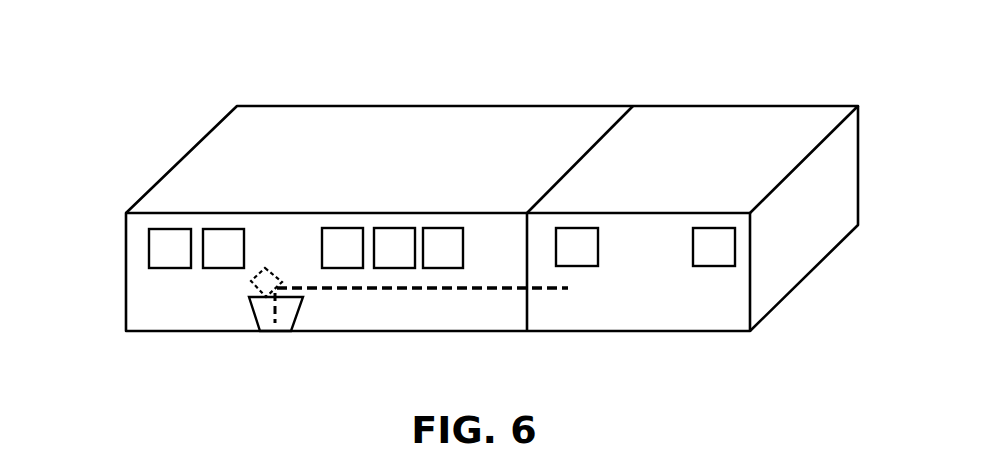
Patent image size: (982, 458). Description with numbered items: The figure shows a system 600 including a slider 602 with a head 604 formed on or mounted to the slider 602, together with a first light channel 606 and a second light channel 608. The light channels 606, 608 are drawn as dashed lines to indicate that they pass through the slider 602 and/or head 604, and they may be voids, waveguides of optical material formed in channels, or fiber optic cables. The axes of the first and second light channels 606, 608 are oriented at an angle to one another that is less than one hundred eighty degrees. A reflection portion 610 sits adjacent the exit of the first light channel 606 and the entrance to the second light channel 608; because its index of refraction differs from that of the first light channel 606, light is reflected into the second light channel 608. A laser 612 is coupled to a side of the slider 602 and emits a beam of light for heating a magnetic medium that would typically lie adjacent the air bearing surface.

The system 600 is at (99, 86).
The slider 602 is at (235, 150).
The head 604 is at (258, 312).
The first light channel 606 is at (440, 290).
The second light channel 608 is at (276, 320).
The reflection portion 610 is at (250, 282).
The laser 612 is at (780, 123).